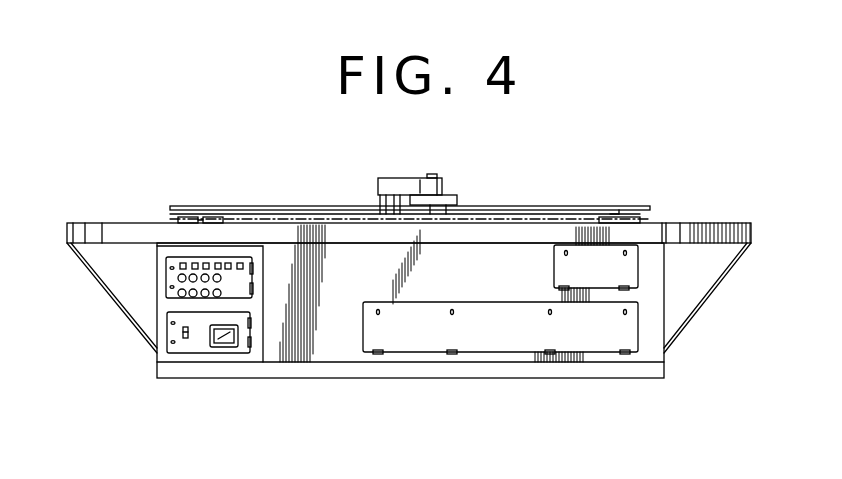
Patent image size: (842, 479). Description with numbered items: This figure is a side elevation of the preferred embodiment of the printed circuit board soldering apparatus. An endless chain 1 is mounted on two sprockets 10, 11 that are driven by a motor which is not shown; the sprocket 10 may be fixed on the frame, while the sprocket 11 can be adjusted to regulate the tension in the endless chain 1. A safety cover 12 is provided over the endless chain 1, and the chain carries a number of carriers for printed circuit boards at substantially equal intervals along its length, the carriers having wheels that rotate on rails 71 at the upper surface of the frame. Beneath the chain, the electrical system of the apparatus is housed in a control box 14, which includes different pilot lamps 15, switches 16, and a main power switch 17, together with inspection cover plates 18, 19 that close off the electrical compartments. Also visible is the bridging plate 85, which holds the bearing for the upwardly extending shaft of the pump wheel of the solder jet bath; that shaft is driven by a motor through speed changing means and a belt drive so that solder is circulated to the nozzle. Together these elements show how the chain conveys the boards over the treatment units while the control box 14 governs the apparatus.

The endless chain 1 is at (540, 214).
The sprocket 10 is at (628, 217).
The sprocket 11 is at (199, 214).
The safety cover 12 is at (284, 206).
The control box 14 is at (245, 308).
The pilot lamps 15 is at (243, 266).
The switches 16 is at (178, 278).
The main power switch 17 is at (185, 338).
The inspection cover plate 18 is at (560, 263).
The inspection cover plate 19 is at (465, 304).
The rails 71 is at (712, 222).
The bridging plate 85 is at (450, 195).